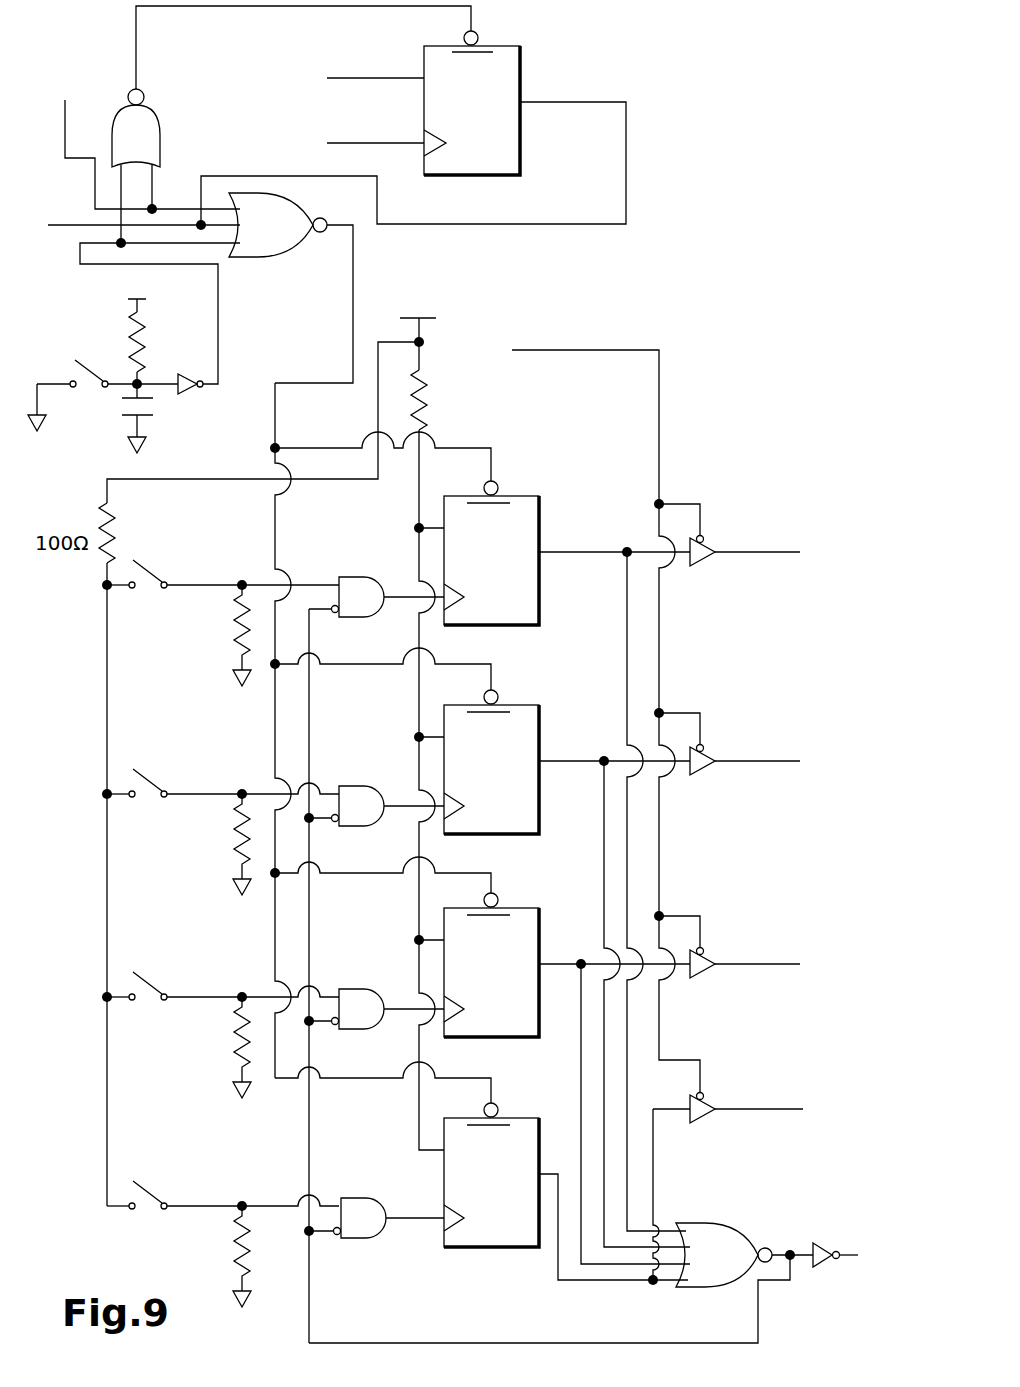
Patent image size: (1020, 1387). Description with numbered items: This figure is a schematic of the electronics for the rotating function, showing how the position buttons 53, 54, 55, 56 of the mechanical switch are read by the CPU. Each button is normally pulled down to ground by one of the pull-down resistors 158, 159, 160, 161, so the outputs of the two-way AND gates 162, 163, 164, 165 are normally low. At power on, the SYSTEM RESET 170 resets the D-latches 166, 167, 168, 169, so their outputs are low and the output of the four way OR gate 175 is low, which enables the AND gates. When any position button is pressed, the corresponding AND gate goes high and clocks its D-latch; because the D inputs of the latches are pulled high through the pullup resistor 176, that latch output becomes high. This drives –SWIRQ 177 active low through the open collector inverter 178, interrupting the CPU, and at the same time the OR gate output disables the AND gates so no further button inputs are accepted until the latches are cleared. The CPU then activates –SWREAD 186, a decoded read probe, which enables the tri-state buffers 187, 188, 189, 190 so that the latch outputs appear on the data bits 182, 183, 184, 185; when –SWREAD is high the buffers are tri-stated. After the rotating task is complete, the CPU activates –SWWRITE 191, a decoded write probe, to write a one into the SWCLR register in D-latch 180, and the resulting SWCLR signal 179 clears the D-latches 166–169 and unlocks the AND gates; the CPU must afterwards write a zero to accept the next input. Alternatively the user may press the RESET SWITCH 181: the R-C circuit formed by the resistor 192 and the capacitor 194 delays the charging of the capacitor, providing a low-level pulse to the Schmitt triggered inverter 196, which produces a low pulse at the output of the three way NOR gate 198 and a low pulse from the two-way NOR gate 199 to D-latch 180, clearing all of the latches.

The SYSTEM RESET 170 is at (63, 128).
The 2-way NOR gate 199 is at (160, 147).
The D-latch 180 is at (522, 67).
The –SWWRITE 191 is at (372, 146).
The SWCLR signal 179 is at (628, 206).
The three way NOR gate 198 is at (306, 262).
The resistor of R-C circuit 192 is at (143, 340).
The Schmitt triggered inverter 196 is at (184, 393).
The RESET SWITCH 181 is at (93, 378).
The capacitor 194 is at (148, 418).
The pullup resistor 176 is at (421, 373).
The –SWREAD 186 is at (656, 349).
The position button 55 is at (151, 589).
The position button 53 is at (152, 798).
The position button 54 is at (152, 1001).
The position button 56 is at (140, 1212).
The pull-down resistor 158 is at (249, 623).
The pull-down resistor 159 is at (249, 832).
The pull-down resistor 160 is at (253, 1040).
The pull-down resistor 161 is at (258, 1240).
The 2-way AND gate 162 is at (372, 576).
The 2-way AND gate 163 is at (384, 786).
The 2-way AND gate 164 is at (382, 988).
The 2-way AND gate 165 is at (378, 1197).
The D-latch 166 is at (526, 496).
The D-latch 167 is at (526, 705).
The D-latch 168 is at (526, 908).
The D-latch 169 is at (527, 1116).
The tri-state buffer 187 is at (704, 560).
The tri-state buffer 188 is at (704, 770).
The tri-state buffer 189 is at (704, 972).
The tri-state buffer 190 is at (708, 1121).
The D0 output 182 is at (748, 549).
The D1 output 183 is at (739, 759).
The D2 output 184 is at (737, 962).
The D3 output 185 is at (742, 1107).
The four way OR gate 175 is at (745, 1228).
The open collector inverter 178 is at (806, 1250).
The –SWIRQ 177 is at (844, 1251).